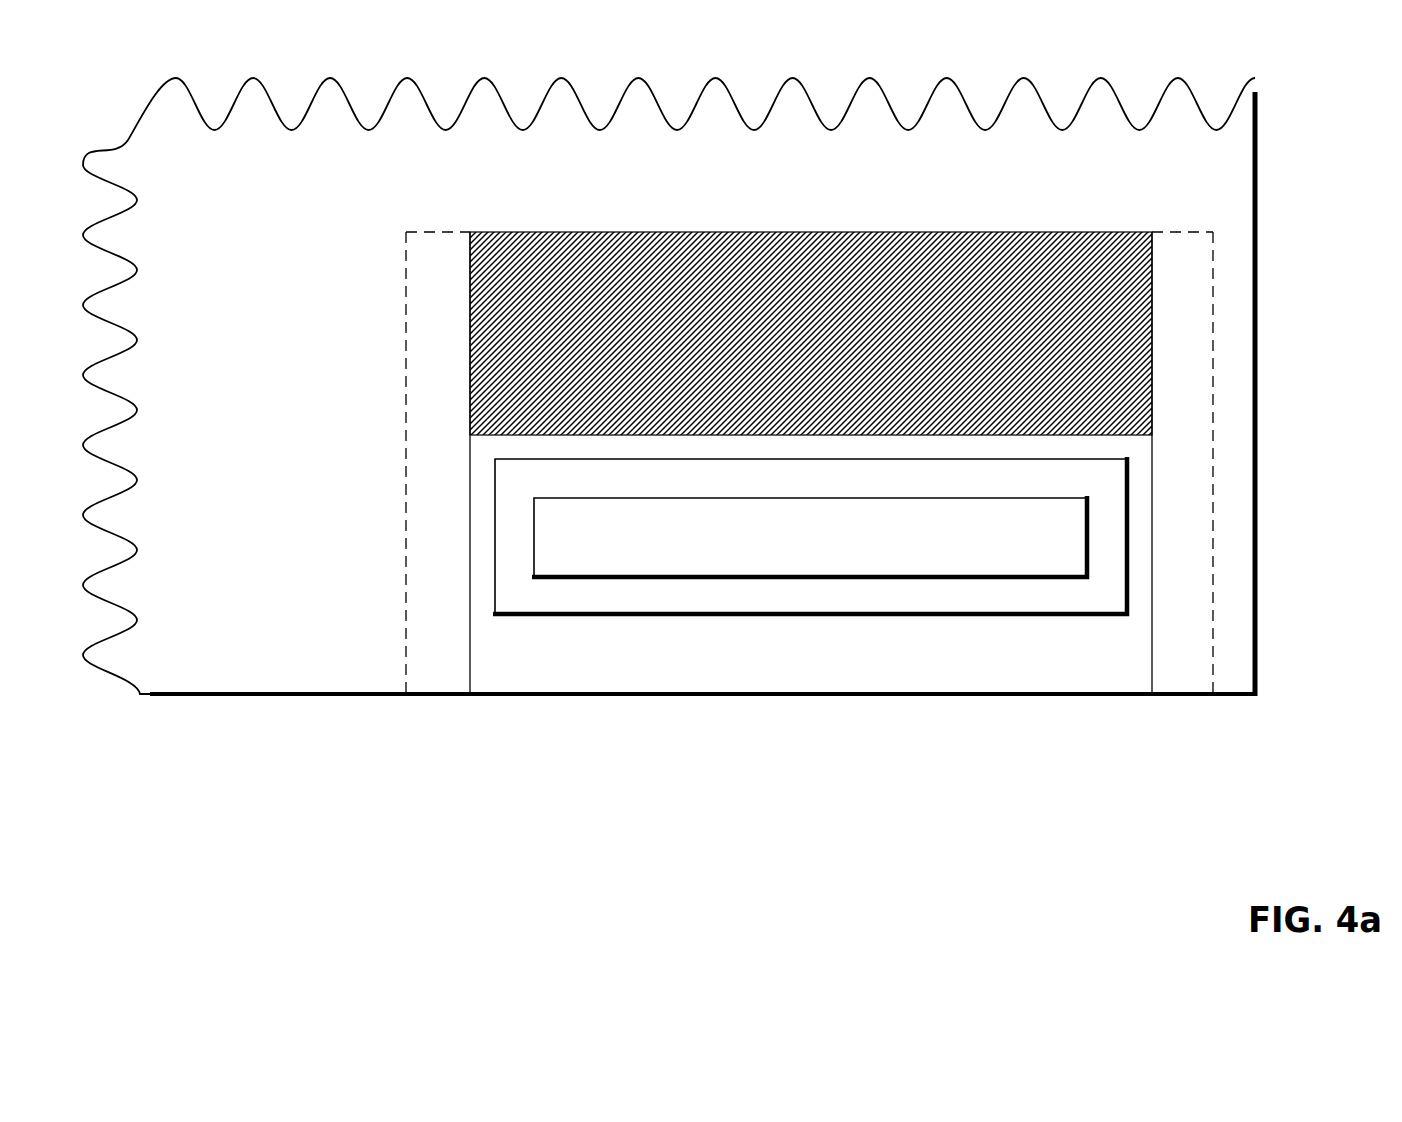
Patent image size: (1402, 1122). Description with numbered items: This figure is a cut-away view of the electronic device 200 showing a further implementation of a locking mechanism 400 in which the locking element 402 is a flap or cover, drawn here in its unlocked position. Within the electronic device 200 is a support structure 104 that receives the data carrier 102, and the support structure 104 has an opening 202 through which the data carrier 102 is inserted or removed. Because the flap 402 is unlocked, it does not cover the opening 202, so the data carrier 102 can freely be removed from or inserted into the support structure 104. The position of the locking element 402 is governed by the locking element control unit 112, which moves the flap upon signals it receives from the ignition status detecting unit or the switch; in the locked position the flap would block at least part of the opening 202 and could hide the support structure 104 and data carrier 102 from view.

The electronic device 200 is at (177, 78).
The locking mechanism 400 is at (1222, 168).
The locking element control unit 112 is at (406, 267).
The locking element 402 is at (1002, 230).
The support structure 104 is at (482, 605).
The data carrier 102 is at (1074, 580).
The opening 202 is at (1113, 590).